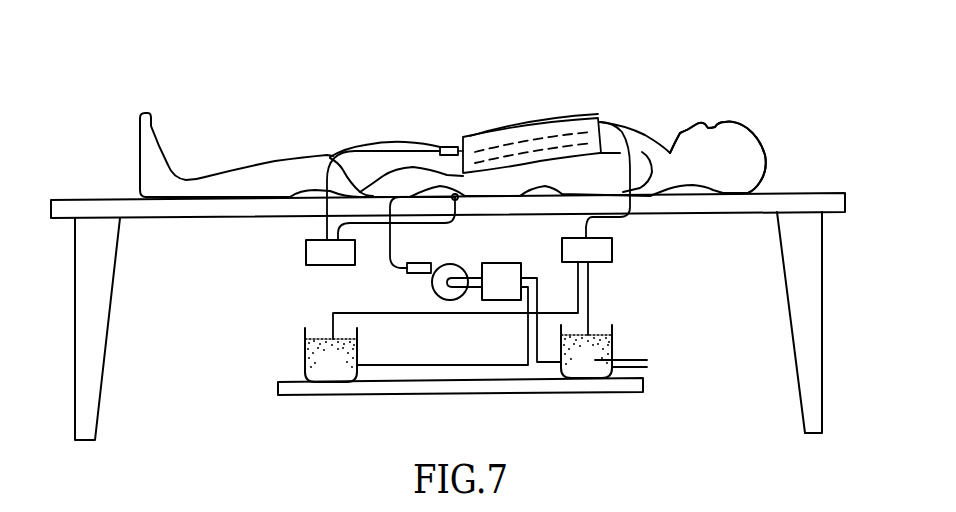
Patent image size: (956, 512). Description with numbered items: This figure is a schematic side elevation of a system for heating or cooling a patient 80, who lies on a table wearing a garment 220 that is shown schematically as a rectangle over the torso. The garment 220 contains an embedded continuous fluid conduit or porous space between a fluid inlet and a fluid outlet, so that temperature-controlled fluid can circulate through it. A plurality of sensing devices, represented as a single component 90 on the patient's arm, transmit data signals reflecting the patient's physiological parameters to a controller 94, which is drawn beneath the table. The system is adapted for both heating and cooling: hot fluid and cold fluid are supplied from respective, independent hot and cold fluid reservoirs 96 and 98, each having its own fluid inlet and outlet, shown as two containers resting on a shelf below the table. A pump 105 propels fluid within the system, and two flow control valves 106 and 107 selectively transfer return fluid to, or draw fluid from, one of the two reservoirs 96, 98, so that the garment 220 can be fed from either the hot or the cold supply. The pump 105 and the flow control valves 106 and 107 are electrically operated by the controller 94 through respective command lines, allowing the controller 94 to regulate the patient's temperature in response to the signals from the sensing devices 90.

The patient 80 is at (727, 147).
The sensing devices 90 is at (450, 147).
The controller 94 is at (306, 252).
The hot fluid reservoir 96 is at (614, 350).
The cold fluid reservoir 98 is at (305, 362).
The pump 105 is at (435, 292).
The flow control valve 106 is at (612, 247).
The flow control valve 107 is at (505, 272).
The garment 220 is at (553, 105).